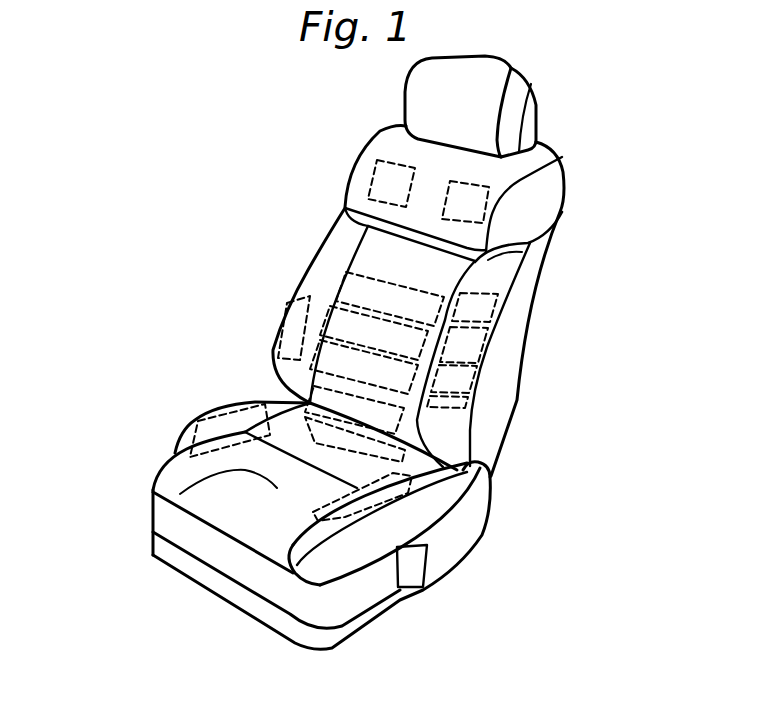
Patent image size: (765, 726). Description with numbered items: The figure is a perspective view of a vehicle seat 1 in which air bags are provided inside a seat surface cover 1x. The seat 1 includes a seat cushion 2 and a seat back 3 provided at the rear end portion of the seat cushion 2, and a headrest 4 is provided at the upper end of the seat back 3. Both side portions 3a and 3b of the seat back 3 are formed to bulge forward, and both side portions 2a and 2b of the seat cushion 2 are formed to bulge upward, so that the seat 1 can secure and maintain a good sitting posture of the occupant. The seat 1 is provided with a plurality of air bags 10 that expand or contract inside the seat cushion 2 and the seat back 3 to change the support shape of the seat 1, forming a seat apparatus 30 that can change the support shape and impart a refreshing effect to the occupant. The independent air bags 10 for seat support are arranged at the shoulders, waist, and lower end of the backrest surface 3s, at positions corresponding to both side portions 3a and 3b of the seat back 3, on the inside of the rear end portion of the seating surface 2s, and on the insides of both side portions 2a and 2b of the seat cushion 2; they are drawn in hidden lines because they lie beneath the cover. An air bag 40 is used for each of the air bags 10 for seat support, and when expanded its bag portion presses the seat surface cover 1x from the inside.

The vehicle seat 1 is at (350, 352).
The seat apparatus 30 is at (139, 114).
The headrest 4 is at (540, 115).
The seat back 3 is at (560, 218).
The side portion of the seat back 3a is at (345, 227).
The side portion of the seat back 3b is at (500, 277).
The backrest surface 3s is at (403, 270).
The seat surface cover 1x is at (274, 399).
The seat cushion 2 is at (157, 470).
The side portion of the seat cushion 2a is at (226, 410).
The side portion of the seat cushion 2b is at (468, 478).
The seating surface 2s is at (175, 497).
The air bags for seat support 10 is at (374, 353).
The air bag 40 is at (380, 163).